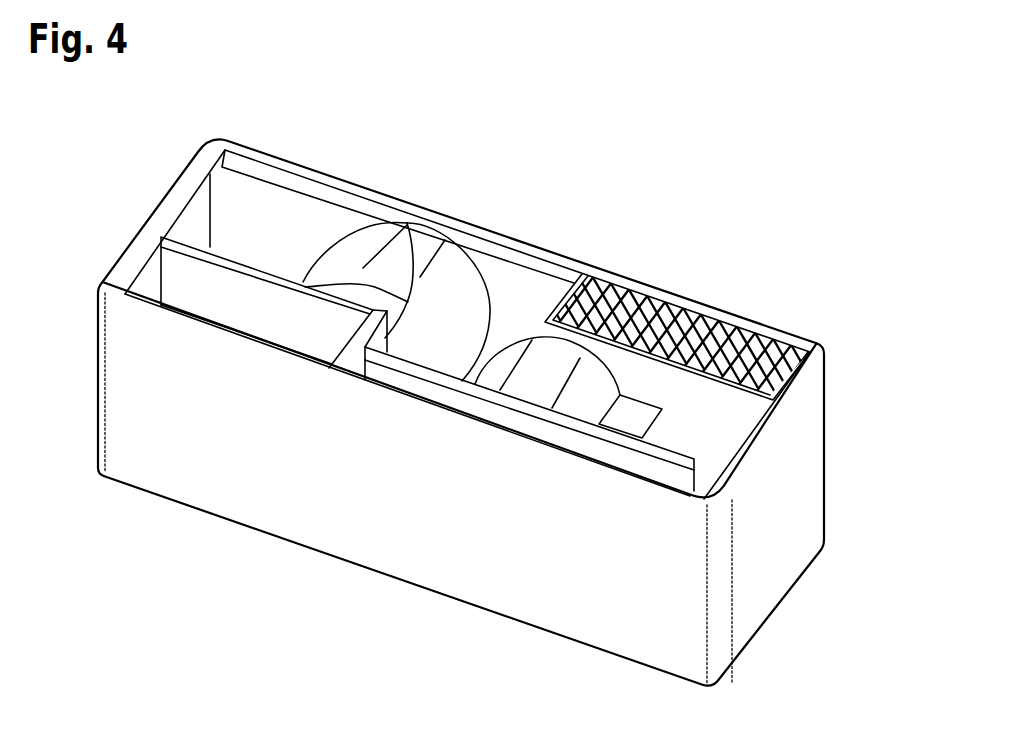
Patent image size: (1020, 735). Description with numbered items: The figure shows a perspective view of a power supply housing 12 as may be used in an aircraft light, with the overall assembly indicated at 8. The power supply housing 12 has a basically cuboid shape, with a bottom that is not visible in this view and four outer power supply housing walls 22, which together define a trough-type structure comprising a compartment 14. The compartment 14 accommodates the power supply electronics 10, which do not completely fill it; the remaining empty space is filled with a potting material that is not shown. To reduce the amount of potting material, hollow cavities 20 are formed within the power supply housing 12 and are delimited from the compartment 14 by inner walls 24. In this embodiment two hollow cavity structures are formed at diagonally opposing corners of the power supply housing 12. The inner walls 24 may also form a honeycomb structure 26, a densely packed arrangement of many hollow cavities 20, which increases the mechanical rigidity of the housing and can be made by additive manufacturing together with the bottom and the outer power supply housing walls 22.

The device assembly 8 is at (742, 236).
The power supply electronics 10 is at (511, 282).
The power supply housing 12 is at (416, 606).
The compartment 14 is at (705, 445).
The hollow cavity 20 is at (152, 277).
The outer power supply housing wall 22 is at (178, 192).
The inner wall 24 is at (252, 292).
The honeycomb structure 26 is at (688, 306).